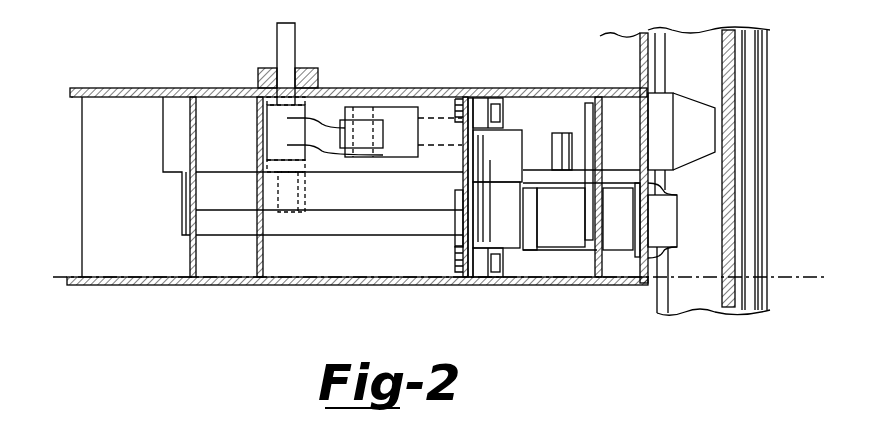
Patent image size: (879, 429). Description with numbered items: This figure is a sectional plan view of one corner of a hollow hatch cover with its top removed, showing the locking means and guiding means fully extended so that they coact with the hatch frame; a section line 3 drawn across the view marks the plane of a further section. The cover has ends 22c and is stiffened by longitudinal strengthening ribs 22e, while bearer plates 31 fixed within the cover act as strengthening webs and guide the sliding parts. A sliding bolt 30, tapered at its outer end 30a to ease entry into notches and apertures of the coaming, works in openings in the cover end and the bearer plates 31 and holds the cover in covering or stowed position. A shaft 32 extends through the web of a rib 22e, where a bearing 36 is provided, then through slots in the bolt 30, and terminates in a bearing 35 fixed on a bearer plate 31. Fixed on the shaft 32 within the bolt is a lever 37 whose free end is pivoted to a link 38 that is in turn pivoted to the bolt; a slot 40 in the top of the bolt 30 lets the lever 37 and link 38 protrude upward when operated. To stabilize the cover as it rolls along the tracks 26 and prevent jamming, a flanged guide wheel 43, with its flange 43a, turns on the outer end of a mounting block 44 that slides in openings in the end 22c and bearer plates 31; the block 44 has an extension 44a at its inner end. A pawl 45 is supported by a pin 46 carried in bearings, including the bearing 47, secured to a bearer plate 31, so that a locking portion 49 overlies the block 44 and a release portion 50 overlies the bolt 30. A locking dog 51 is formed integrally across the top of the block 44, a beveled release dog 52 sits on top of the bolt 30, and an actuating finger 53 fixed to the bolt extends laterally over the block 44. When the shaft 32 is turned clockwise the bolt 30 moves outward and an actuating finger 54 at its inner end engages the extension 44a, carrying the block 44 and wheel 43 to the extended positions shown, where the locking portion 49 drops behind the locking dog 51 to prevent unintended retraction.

The section line 3- 3 is at (58, 284).
The strengthening ribs 22e is at (146, 88).
The ends 22c is at (652, 36).
The tracks 26 is at (712, 300).
The sliding bolt 30 is at (512, 105).
The tapered outer end 30a is at (695, 105).
The bearer plates 31 is at (198, 268).
The shaft 32 is at (289, 48).
The bearing 35 is at (305, 198).
The bearing 36 is at (257, 74).
The lever 37 is at (312, 128).
The link 38 is at (398, 125).
The slot 40 is at (393, 112).
The flanged guide wheel 43 is at (665, 228).
The piston flange 43a is at (665, 186).
The mounting block 44 is at (637, 245).
The extension 44a is at (365, 225).
The pawl 45 is at (505, 188).
The pin 46 is at (492, 284).
The bearing 47 is at (478, 105).
The locking portion 49 is at (462, 240).
The release portion 50 is at (508, 140).
The locking dog 51 is at (527, 245).
The beveled release dog 52 is at (560, 142).
The actuating finger 53 is at (592, 100).
The actuating finger 54 is at (181, 197).